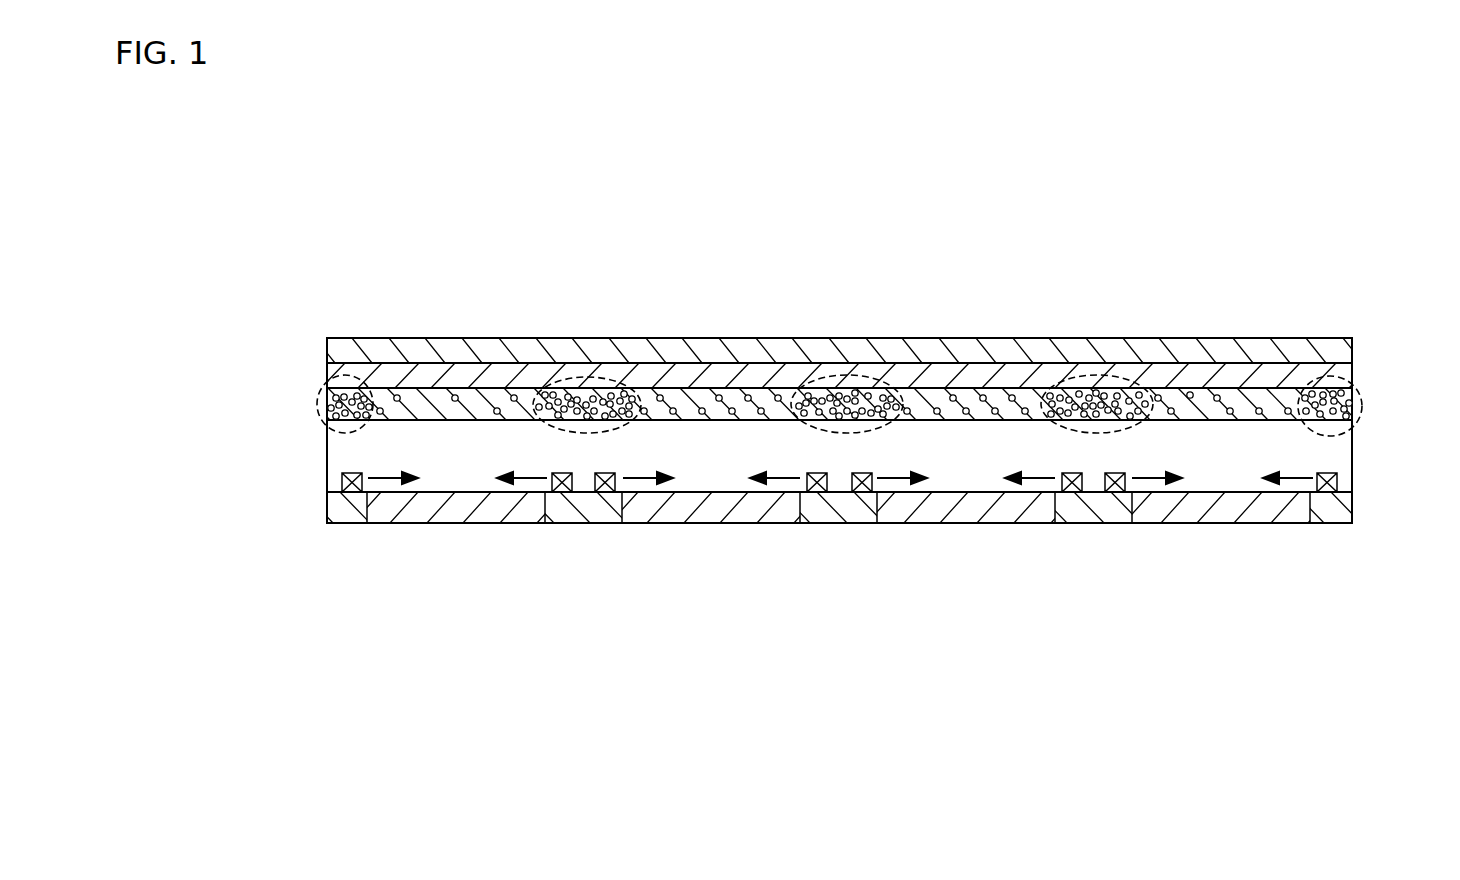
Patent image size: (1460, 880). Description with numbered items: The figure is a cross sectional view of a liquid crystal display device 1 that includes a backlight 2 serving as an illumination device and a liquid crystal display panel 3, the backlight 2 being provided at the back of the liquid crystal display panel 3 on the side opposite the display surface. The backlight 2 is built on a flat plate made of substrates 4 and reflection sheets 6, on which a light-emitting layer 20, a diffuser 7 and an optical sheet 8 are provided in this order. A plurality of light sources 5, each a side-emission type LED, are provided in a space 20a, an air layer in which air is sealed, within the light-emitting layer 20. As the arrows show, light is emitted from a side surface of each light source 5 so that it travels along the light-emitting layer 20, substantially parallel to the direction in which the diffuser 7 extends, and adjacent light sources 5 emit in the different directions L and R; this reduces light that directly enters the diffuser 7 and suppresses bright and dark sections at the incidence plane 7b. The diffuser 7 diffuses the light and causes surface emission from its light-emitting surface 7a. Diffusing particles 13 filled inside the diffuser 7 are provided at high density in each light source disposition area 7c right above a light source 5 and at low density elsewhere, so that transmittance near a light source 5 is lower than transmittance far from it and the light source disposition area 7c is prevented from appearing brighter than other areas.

The liquid crystal display device 1 is at (168, 323).
The backlight 2 is at (215, 358).
The liquid crystal display panel 3 is at (335, 348).
The optical sheet 8 is at (337, 377).
The diffuser 7 is at (1415, 352).
The light-emitting surface 7a is at (1327, 380).
The incidence plane 7b is at (1323, 421).
The light source disposition area 7c is at (349, 376).
The diffusing particles 13 is at (1190, 392).
The light-emitting layer 20 is at (267, 425).
The space 20a is at (353, 443).
The light sources 5 is at (355, 493).
The reflection sheets 6 is at (452, 517).
The substrates 4 is at (584, 517).